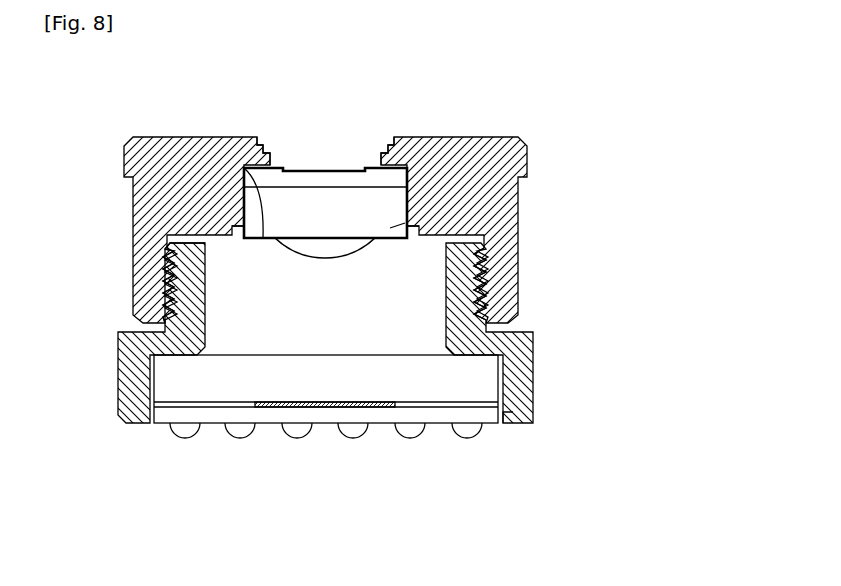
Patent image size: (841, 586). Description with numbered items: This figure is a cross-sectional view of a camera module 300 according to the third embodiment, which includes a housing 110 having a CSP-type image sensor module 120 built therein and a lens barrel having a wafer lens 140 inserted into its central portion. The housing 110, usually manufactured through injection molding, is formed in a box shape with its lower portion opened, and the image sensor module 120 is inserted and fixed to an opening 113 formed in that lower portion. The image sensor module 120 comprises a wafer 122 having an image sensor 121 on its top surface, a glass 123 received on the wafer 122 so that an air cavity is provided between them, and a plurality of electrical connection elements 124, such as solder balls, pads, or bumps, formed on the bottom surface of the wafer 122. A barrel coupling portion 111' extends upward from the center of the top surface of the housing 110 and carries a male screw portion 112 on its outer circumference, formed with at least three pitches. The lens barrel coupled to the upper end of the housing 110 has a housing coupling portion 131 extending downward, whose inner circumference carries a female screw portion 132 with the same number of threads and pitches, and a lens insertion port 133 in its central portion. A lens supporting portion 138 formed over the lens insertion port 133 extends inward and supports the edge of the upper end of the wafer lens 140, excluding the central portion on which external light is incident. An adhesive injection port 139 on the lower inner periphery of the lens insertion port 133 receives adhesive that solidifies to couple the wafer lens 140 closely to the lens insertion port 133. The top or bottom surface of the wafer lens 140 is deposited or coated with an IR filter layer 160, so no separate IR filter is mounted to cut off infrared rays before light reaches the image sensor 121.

The camera module 300 is at (580, 156).
The housing 110 is at (530, 380).
The barrel coupling portion 111' is at (125, 283).
The male screw portion 112 is at (178, 310).
The opening 113 is at (500, 412).
The image sensor module 120 is at (247, 507).
The image sensor 121 is at (328, 407).
The wafer 122 is at (273, 413).
The glass 123 is at (387, 383).
The electrical connection elements 124 is at (186, 429).
The housing coupling portion 131 is at (507, 264).
The female screw portion 132 is at (480, 300).
The lens insertion port 133 is at (411, 205).
The lens supporting portion 138 is at (389, 148).
The adhesive injection port 139 is at (233, 230).
The wafer lens 140 is at (404, 223).
The IR filter layer 160 is at (241, 166).